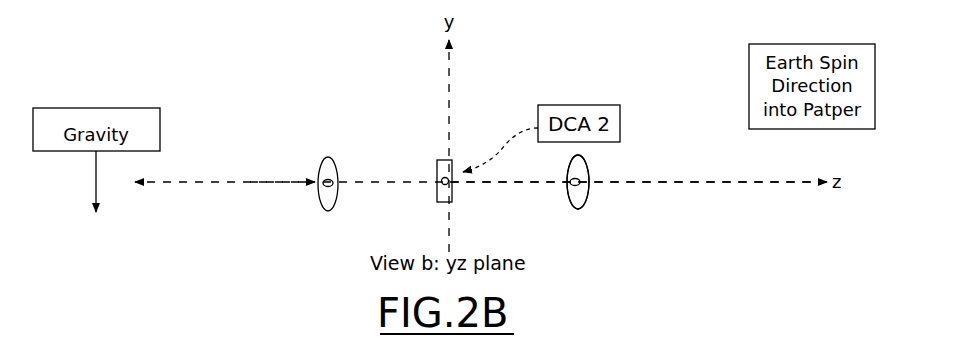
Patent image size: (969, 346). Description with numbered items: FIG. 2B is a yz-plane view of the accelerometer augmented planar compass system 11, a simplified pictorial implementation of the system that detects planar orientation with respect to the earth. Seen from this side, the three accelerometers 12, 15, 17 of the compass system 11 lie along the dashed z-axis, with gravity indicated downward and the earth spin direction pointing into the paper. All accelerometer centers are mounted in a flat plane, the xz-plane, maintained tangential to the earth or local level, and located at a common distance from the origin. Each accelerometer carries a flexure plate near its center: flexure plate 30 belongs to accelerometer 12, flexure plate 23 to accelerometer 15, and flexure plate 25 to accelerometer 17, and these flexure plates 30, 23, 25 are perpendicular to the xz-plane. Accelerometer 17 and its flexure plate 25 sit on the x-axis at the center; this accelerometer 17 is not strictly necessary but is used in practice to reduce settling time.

The compass system 11 is at (579, 211).
The accelerometer 12 is at (586, 160).
The flexure plate 30 is at (583, 193).
The accelerometer 15 is at (330, 157).
The flexure plate 23 is at (323, 190).
The accelerometer 17 is at (437, 165).
The flexure plate 25 is at (453, 182).